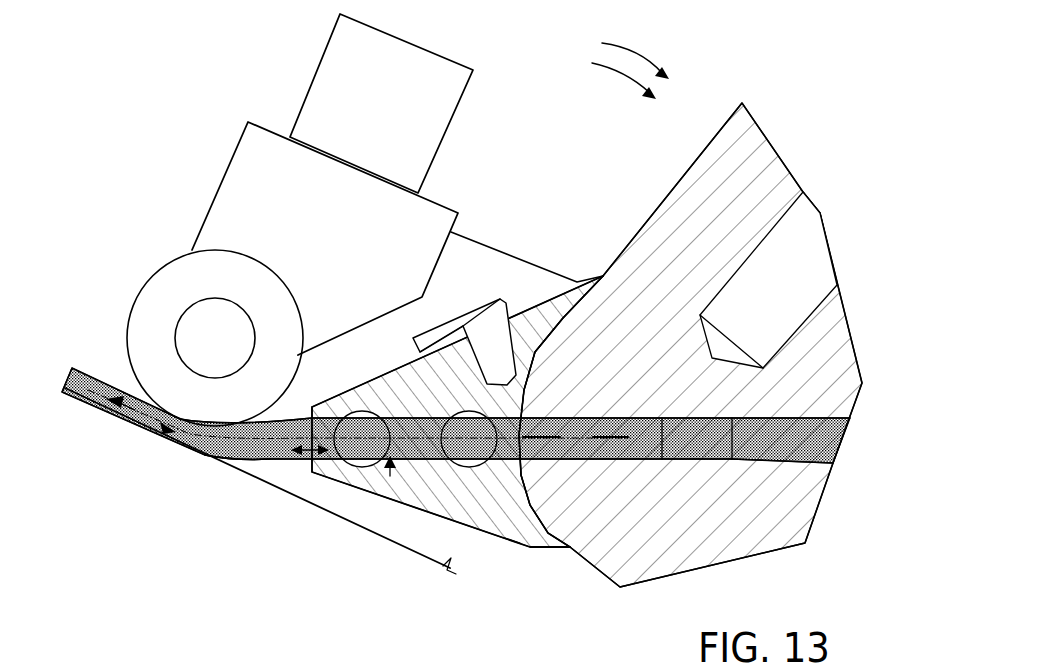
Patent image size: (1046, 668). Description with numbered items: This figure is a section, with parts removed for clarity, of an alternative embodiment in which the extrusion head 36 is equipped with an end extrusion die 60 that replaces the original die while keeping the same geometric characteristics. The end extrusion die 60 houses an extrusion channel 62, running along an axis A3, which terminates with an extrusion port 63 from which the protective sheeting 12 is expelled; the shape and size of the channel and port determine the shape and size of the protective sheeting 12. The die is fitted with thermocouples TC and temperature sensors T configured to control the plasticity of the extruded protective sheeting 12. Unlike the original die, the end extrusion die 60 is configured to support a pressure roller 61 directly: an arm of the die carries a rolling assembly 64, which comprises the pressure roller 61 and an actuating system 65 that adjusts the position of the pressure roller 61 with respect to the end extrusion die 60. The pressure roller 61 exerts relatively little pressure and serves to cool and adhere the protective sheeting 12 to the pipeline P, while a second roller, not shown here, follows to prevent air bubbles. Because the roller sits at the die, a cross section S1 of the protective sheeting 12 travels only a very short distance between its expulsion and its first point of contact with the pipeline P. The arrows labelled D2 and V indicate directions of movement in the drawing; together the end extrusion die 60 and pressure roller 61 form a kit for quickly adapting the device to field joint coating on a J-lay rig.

The protective sheeting 12 is at (293, 405).
The extrusion head 36 is at (651, 180).
The end extrusion die 60 is at (423, 497).
The pressure roller 61 is at (137, 268).
The extrusion channel 62 is at (390, 476).
The extrusion port 63 is at (279, 461).
The rolling assembly 64 is at (465, 128).
The actuating system 65 is at (423, 157).
The temperature sensors T is at (398, 400).
The thermocouples TC is at (466, 392).
The cross section S1 is at (157, 436).
The axis A3 is at (513, 538).
The pipeline P is at (443, 608).
The direction D2 is at (636, 53).
The velocity direction V is at (613, 73).